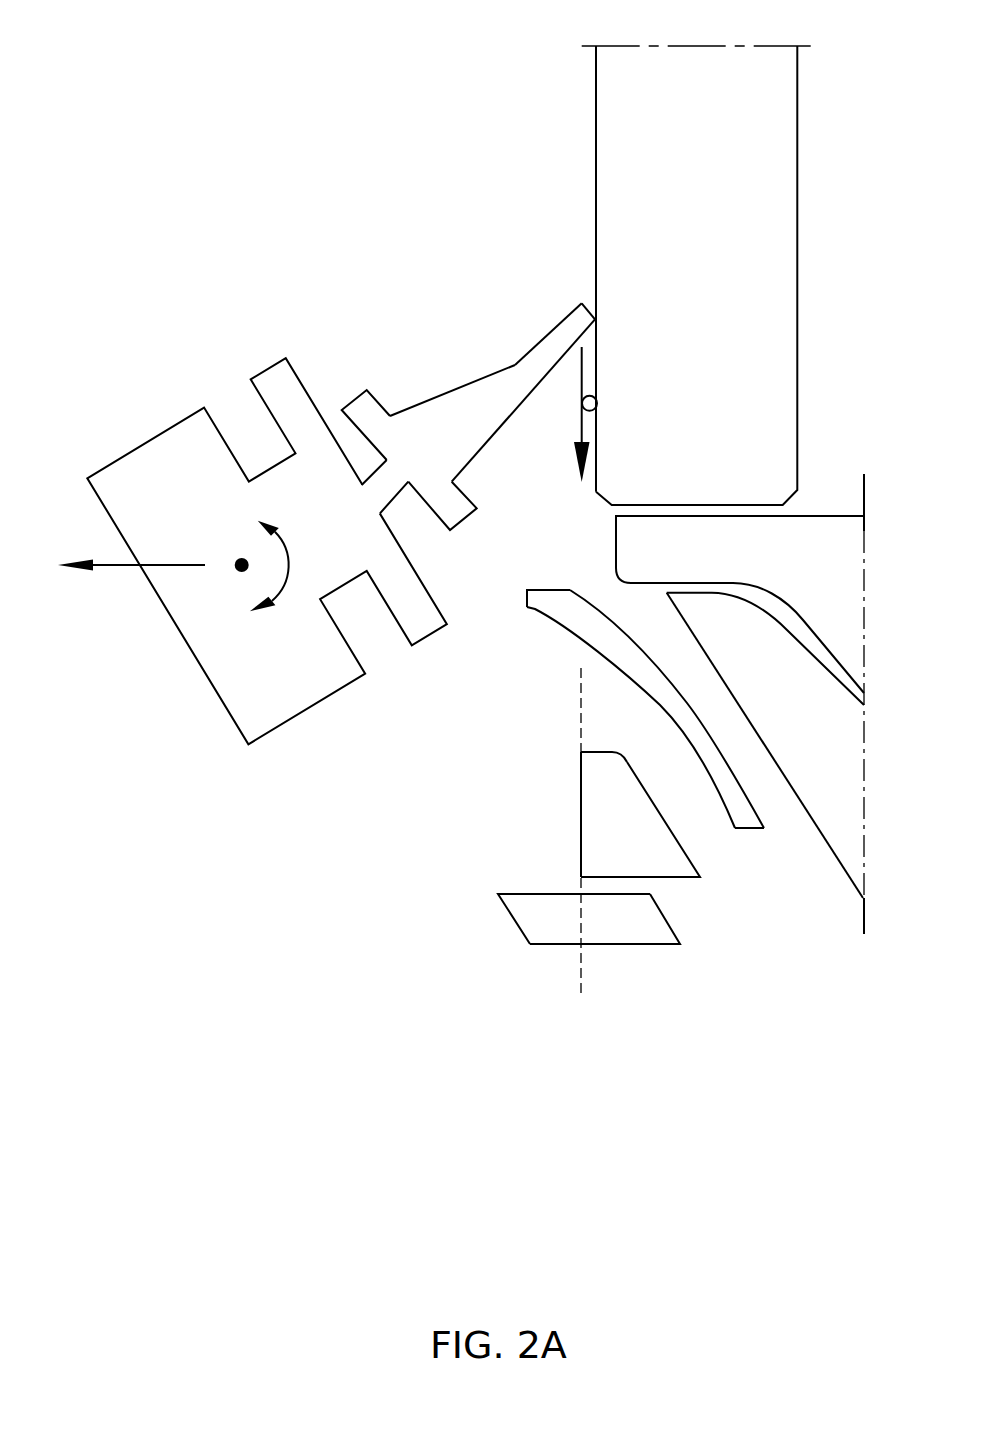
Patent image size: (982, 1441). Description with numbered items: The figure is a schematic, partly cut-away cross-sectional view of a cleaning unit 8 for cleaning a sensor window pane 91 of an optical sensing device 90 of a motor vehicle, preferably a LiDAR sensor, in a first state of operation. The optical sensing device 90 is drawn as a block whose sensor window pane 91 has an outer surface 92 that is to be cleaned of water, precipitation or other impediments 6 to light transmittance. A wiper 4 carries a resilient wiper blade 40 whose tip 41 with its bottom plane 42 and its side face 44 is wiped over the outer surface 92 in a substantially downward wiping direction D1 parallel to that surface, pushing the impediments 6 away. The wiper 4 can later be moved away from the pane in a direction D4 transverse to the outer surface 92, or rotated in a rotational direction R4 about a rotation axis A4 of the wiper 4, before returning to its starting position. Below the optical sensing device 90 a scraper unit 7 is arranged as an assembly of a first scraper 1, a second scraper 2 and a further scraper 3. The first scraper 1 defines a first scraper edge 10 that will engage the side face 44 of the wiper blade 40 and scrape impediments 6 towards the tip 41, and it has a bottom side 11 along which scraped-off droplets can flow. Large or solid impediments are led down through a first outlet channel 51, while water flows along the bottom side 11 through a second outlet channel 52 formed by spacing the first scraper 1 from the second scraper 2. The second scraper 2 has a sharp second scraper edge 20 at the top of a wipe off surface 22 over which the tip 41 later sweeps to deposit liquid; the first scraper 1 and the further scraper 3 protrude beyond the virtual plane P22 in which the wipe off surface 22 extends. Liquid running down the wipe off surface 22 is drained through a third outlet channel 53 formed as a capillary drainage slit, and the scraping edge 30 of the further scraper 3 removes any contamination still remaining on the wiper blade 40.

The cleaning unit 8 is at (380, 79).
The wiper 4 is at (167, 458).
The wiper blade 40 is at (506, 389).
The tip 41 is at (561, 295).
The bottom plane 42 is at (596, 304).
The side face 44 is at (552, 378).
The rotation axis A4 is at (240, 562).
The rotational direction R4 is at (290, 566).
The direction D4 is at (118, 568).
The optical sensing device 90 is at (647, 275).
The sensor window pane 91 is at (612, 193).
The outer surface 92 is at (584, 137).
The impediments 6 is at (592, 403).
The wiping direction D1 is at (582, 358).
The first scraper 1 is at (604, 687).
The first scraper edge 10 is at (510, 582).
The bottom side 11 is at (548, 638).
The second scraper 2 is at (598, 793).
The second scraper edge 20 is at (562, 744).
The wipe off surface 22 is at (569, 782).
The virtual plane P22 is at (581, 990).
The further scraper 3 is at (546, 903).
The scraping edge 30 is at (484, 888).
The scraper unit 7 is at (524, 836).
The first outlet channel 51 is at (752, 770).
The second outlet channel 52 is at (685, 797).
The third outlet channel 53 is at (627, 887).